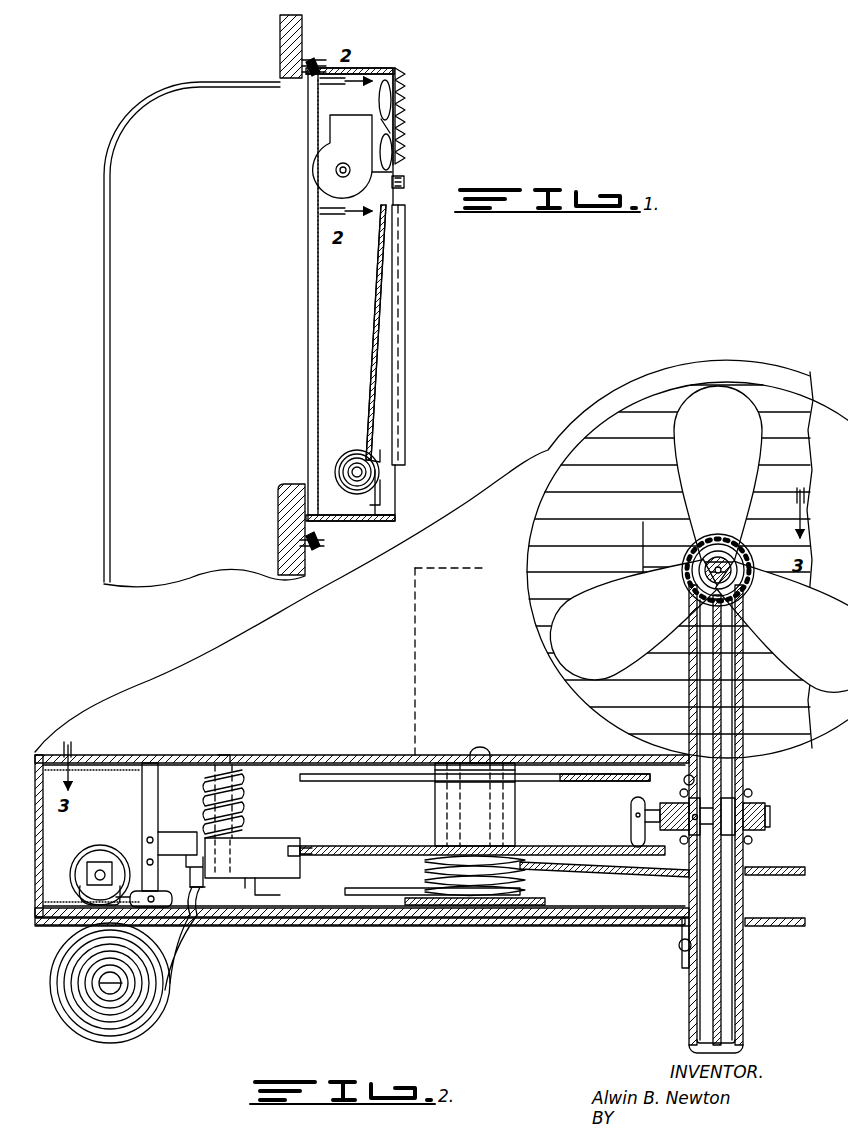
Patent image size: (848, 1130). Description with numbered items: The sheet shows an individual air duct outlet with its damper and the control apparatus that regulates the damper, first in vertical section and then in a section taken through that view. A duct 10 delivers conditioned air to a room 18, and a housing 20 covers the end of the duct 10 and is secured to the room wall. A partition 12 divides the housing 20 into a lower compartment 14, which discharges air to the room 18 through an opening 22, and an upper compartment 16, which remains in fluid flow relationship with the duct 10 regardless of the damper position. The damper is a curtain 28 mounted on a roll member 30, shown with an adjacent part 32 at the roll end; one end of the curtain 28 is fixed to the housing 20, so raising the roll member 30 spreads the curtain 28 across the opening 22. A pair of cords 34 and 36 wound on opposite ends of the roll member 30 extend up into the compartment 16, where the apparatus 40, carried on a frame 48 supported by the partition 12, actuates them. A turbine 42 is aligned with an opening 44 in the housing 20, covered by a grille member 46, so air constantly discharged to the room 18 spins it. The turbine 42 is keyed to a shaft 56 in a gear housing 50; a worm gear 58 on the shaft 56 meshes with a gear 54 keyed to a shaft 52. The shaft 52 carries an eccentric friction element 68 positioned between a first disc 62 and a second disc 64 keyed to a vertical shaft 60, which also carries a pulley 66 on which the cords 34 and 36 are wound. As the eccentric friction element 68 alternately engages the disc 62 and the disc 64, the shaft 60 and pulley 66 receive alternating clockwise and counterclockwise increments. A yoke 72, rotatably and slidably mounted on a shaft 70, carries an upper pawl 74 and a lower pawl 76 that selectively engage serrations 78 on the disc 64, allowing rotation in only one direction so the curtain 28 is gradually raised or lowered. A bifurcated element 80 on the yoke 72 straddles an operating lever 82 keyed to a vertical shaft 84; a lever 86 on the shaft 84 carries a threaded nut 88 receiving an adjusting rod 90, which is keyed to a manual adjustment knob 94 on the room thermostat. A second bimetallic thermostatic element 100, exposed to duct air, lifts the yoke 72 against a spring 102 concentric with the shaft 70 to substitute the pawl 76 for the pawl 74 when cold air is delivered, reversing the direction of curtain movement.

In FIG. 1, the duct 10 is at (110, 358).
In FIG. 1, the partition 12 is at (384, 203).
In FIG. 2, the partition 12 is at (292, 926).
In FIG. 1, the compartment 14 is at (352, 346).
In FIG. 1, the compartment 16 is at (368, 111).
In FIG. 1, the room 18 is at (450, 286).
In FIG. 2, the housing 20 is at (352, 638).
In FIG. 1, the opening 22 is at (400, 353).
In FIG. 1, the curtain 28 is at (372, 456).
In FIG. 1, the roll member 30 is at (352, 472).
In FIG. 1, the spring end 32 is at (354, 452).
In FIG. 2, the cord 34 is at (356, 876).
In FIG. 1, the cord 36 is at (374, 292).
In FIG. 2, the cord 36 is at (775, 876).
In FIG. 1, the apparatus 40 is at (330, 156).
In FIG. 2, the apparatus 40 is at (176, 755).
In FIG. 1, the turbine 42 is at (394, 97).
In FIG. 2, the turbine 42 is at (690, 494).
In FIG. 1, the opening 44 is at (406, 112).
In FIG. 2, the opening 44 is at (528, 560).
In FIG. 1, the grille member 46 is at (400, 122).
In FIG. 2, the frame 48 is at (252, 755).
In FIG. 1, the gear housing 50 is at (328, 182).
In FIG. 2, the gear housing 50 is at (744, 1008).
In FIG. 2, the shaft 52 is at (760, 832).
In FIG. 2, the gear 54 is at (740, 772).
In FIG. 2, the shaft 56 is at (738, 556).
In FIG. 2, the worm gear 58 is at (705, 558).
In FIG. 2, the vertical shaft 60 is at (490, 755).
In FIG. 2, the first disc 62 is at (560, 782).
In FIG. 2, the second disc 64 is at (560, 846).
In FIG. 2, the pulley 66 is at (547, 902).
In FIG. 2, the eccentric friction element 68 is at (631, 820).
In FIG. 2, the shaft 70 is at (242, 790).
In FIG. 2, the yoke 72 is at (258, 846).
In FIG. 2, the pawl 74 is at (294, 846).
In FIG. 2, the pawl 76 is at (272, 880).
In FIG. 2, the serrations 78 is at (325, 846).
In FIG. 2, the bifurcated element 80 is at (197, 874).
In FIG. 2, the operating lever 82 is at (178, 832).
In FIG. 2, the vertical shaft 84 is at (142, 806).
In FIG. 2, the lever 86 is at (134, 868).
In FIG. 2, the threaded nut 88 is at (100, 850).
In FIG. 2, the adjusting rod 90 is at (96, 875).
In FIG. 1, the manual adjustment knob 94 is at (405, 183).
In FIG. 2, the bimetallic thermostatic element 100 is at (160, 1023).
In FIG. 2, the spring 102 is at (242, 816).